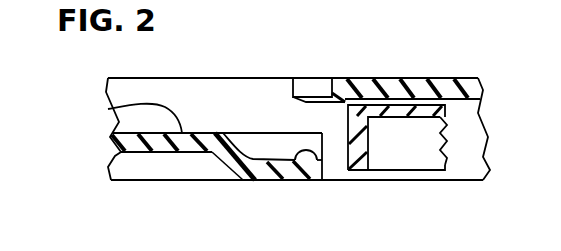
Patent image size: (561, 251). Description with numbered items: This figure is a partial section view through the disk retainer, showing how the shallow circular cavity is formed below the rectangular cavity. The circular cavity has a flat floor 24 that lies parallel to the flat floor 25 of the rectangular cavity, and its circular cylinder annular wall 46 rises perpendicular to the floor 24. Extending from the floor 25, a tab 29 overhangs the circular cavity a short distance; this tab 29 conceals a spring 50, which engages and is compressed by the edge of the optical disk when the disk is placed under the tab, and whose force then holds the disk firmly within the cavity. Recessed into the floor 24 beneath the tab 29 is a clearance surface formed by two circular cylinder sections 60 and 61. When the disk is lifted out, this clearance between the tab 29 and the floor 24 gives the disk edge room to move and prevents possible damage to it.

The flat floor 24 is at (110, 108).
The flat floor 25 is at (417, 78).
The tab 29 is at (313, 88).
The annular wall 46 is at (211, 100).
The spring 50 is at (357, 148).
The circular cylinder section 60 is at (316, 157).
The circular cylinder section 61 is at (243, 152).